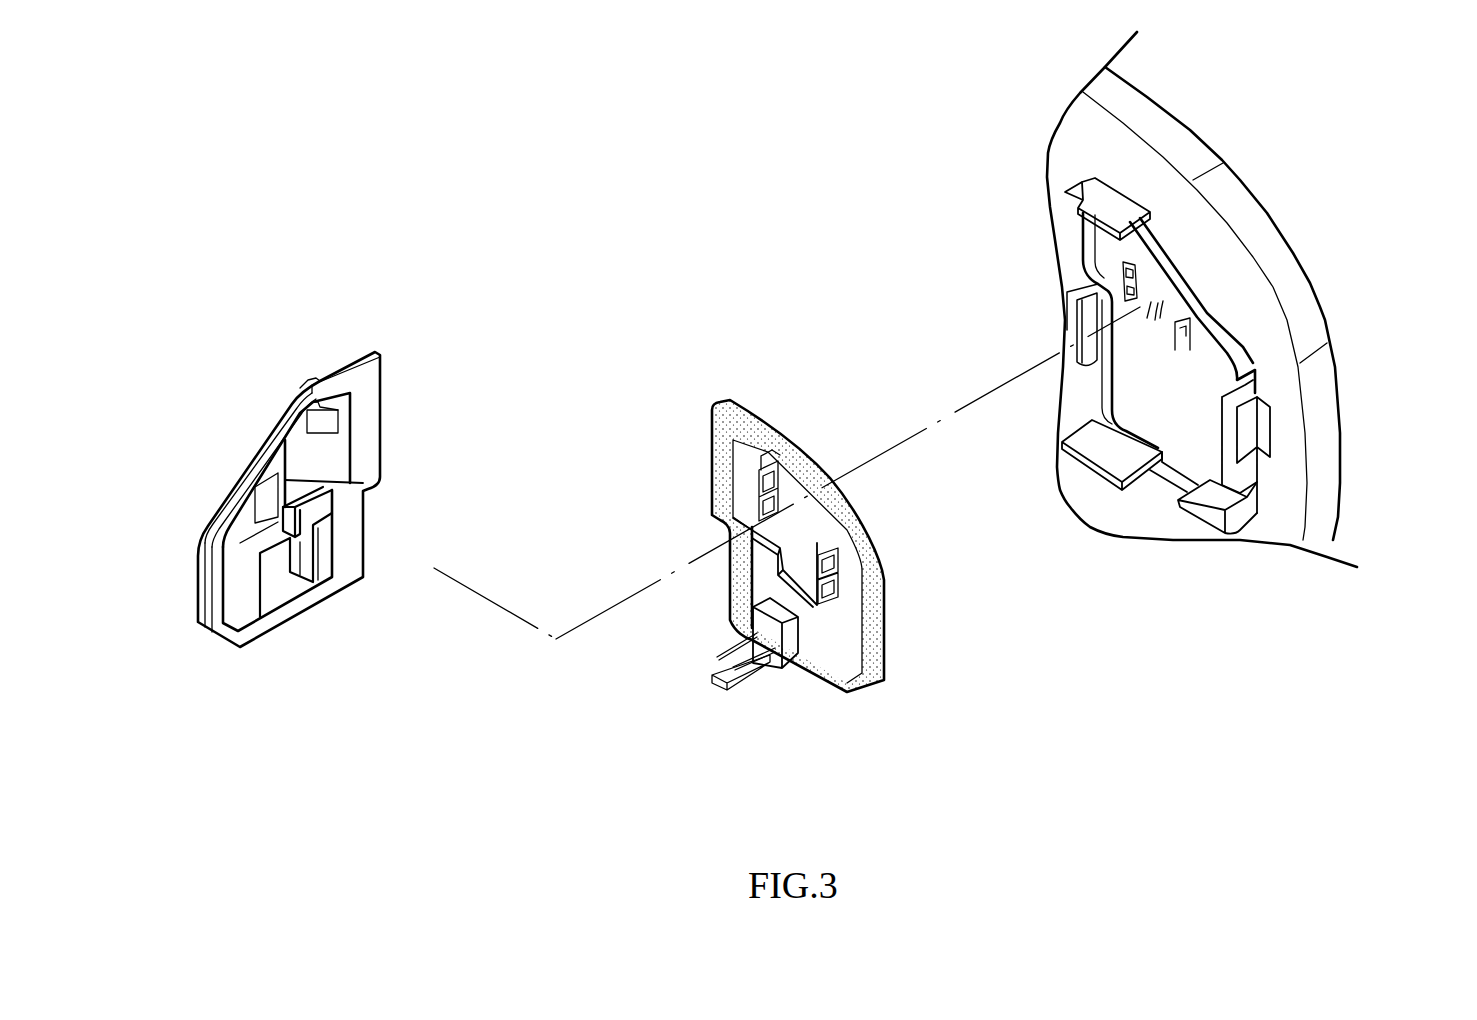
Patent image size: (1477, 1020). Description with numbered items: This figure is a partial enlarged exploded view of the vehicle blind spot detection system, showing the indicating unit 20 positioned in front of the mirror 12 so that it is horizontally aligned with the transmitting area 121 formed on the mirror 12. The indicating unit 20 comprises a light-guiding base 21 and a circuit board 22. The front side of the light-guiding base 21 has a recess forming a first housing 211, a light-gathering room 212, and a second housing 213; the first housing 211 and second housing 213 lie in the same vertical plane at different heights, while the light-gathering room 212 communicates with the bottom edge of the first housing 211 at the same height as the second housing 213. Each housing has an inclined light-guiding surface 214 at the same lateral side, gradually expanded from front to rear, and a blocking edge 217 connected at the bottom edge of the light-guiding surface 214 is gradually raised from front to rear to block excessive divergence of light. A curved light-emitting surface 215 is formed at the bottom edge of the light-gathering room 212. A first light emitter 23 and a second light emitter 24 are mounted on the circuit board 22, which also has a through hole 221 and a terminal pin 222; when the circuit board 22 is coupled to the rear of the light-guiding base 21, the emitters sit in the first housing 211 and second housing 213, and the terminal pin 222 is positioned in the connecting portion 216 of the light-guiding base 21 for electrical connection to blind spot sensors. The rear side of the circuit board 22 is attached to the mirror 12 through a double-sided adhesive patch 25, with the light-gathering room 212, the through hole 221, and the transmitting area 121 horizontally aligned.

The mirror 12 is at (1338, 432).
The transmitting area 121 is at (1130, 261).
The indicating unit 20 is at (180, 604).
The light-guiding base 21 is at (340, 360).
The first housing 211 is at (277, 403).
The light-gathering room 212 is at (343, 440).
The second housing 213 is at (207, 508).
The light-guiding surface 214 is at (268, 483).
The light-emitting surface 215 is at (327, 468).
The connecting portion 216 is at (273, 580).
The blocking edge 217 is at (313, 517).
The circuit board 22 is at (757, 594).
The through hole 221 is at (810, 549).
The terminal pin 222 is at (760, 661).
The first light emitter 23 is at (757, 468).
The second light emitter 24 is at (823, 591).
The double-sided adhesive patch 25 is at (730, 398).